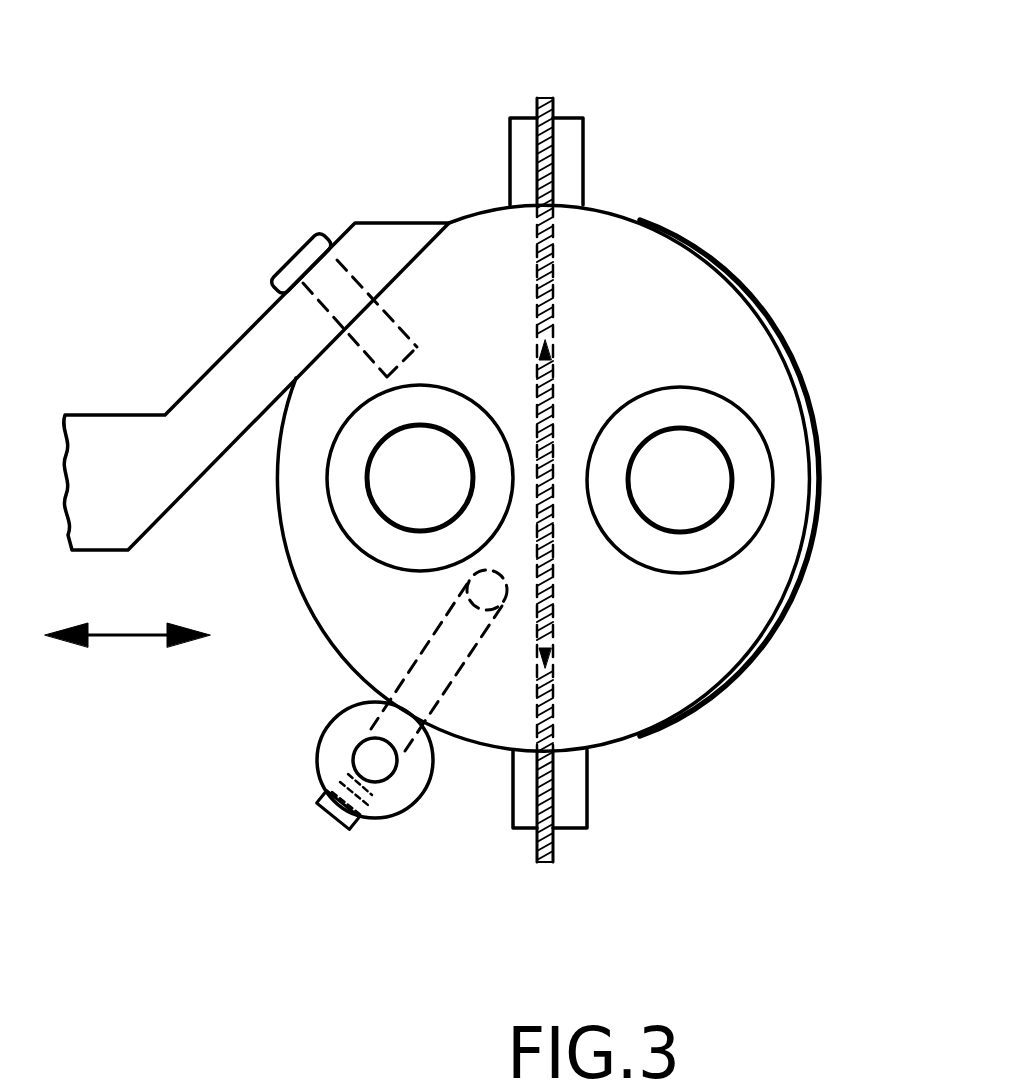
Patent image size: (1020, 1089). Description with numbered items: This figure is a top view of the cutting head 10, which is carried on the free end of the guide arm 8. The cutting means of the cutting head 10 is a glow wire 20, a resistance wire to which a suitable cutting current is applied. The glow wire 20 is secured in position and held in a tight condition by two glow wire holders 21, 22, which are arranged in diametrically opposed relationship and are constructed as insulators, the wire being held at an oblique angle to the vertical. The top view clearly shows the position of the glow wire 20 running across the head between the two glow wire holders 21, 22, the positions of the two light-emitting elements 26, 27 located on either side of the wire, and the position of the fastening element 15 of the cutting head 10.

The cutting head 10 is at (460, 178).
The guide arm 8 is at (106, 475).
The fastening element 15 is at (412, 670).
The glow wire 20 is at (550, 187).
The glow wire holder 21 is at (570, 800).
The glow wire holder 22 is at (568, 162).
The light-emitting element 26 is at (427, 480).
The light-emitting element 27 is at (677, 480).